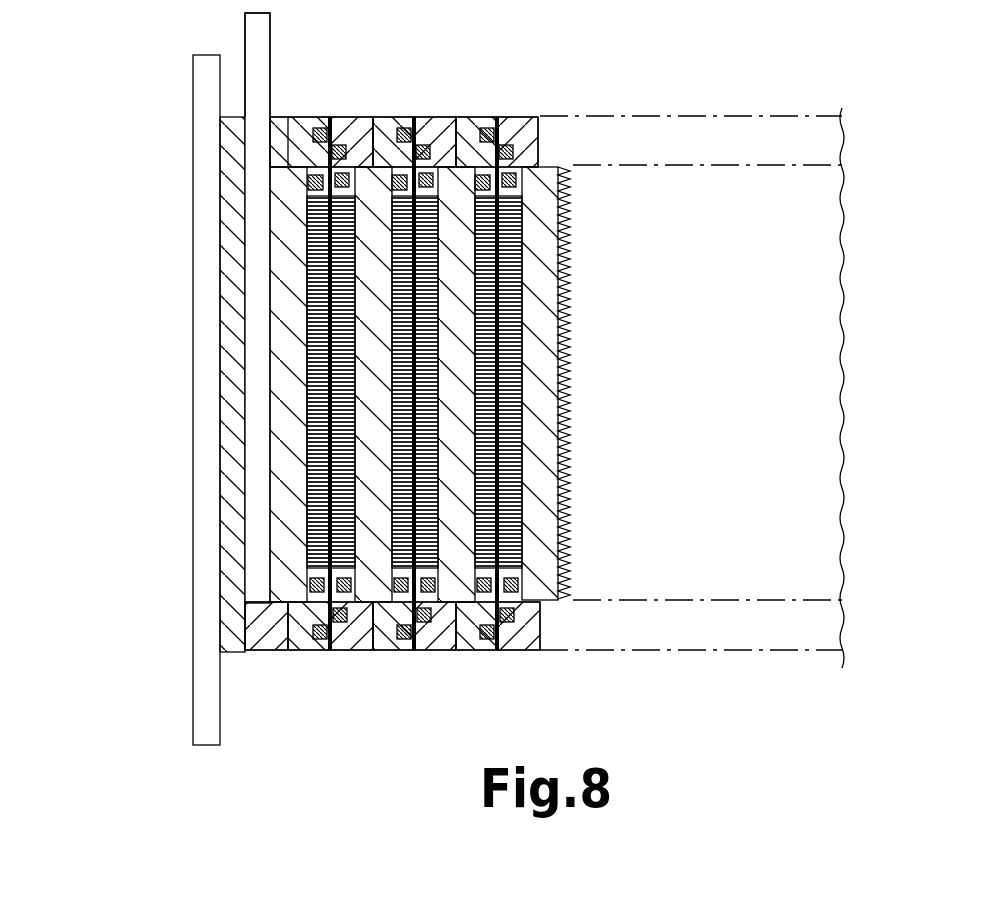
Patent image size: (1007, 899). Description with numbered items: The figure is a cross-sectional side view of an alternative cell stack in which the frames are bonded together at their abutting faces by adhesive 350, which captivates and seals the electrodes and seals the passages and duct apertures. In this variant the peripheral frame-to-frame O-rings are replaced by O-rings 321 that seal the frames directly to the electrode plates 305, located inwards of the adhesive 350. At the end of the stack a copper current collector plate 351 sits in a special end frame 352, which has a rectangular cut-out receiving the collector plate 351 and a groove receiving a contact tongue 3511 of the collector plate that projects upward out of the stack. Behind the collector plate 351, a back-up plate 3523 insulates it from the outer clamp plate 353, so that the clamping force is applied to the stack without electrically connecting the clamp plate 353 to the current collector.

The electrode plate 305 is at (544, 195).
The O-ring 321 is at (515, 162).
The adhesive 350 is at (468, 118).
The copper current collector plate 351 is at (253, 235).
The contact tongue 3511 is at (256, 47).
The end frame 352 is at (265, 610).
The back-up plate 3523 is at (230, 552).
The clamp plate 353 is at (208, 713).